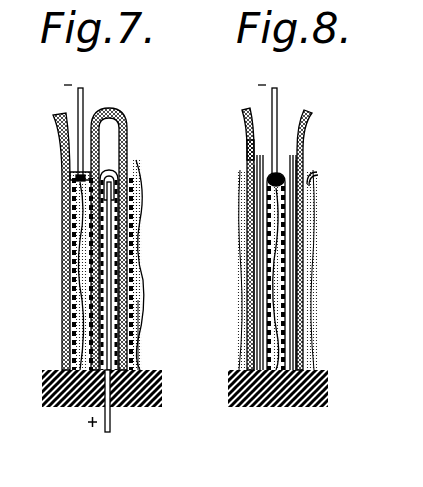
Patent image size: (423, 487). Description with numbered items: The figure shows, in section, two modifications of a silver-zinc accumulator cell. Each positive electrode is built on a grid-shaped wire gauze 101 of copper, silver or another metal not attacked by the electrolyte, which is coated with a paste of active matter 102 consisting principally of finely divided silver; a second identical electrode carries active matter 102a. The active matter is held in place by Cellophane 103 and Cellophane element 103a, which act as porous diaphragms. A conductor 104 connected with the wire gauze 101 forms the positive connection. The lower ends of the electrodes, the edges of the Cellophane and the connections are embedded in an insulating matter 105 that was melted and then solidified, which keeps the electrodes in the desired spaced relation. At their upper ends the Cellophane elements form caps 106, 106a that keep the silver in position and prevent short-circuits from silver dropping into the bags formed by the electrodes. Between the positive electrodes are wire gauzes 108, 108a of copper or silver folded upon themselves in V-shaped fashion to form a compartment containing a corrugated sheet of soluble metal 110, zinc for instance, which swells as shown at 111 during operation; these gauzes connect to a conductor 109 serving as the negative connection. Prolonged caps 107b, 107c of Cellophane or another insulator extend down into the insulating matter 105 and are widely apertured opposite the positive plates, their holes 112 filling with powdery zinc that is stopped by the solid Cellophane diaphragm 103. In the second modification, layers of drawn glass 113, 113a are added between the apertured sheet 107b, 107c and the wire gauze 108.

In FIG. 7, the wire gauze 101 is at (113, 300).
In FIG. 7, the active matter 102 is at (142, 330).
In FIG. 8, the active matter 102 is at (246, 256).
In FIG. 8, the active matter 102a is at (303, 267).
In FIG. 7, the Cellophane 103 is at (66, 248).
In FIG. 8, the Cellophane 103 is at (245, 220).
In FIG. 8, the Cellophane element 103a is at (302, 226).
In FIG. 7, the conductor 104 is at (111, 427).
In FIG. 7, the insulating matter 105 is at (46, 370).
In FIG. 8, the insulating matter 105 is at (318, 370).
In FIG. 8, the cap 106 is at (247, 152).
In FIG. 7, the cap 106a is at (136, 192).
In FIG. 7, the prolonged cap 107b is at (58, 126).
In FIG. 8, the prolonged cap 107b is at (247, 140).
In FIG. 7, the prolonged cap 107c is at (124, 120).
In FIG. 8, the prolonged cap 107c is at (302, 135).
In FIG. 7, the wire gauze 108 is at (70, 176).
In FIG. 8, the wire gauze 108 is at (286, 297).
In FIG. 7, the wire gauze 108a is at (136, 168).
In FIG. 7, the conductor 109 is at (84, 100).
In FIG. 8, the conductor 109 is at (278, 102).
In FIG. 7, the corrugated sheet of soluble metal 110 is at (142, 350).
In FIG. 8, the corrugated sheet of soluble metal 110 is at (270, 277).
In FIG. 7, the swelling of zinc sheet 111 is at (142, 262).
In FIG. 8, the swelling of zinc sheet 111 is at (268, 308).
In FIG. 7, the holes 112 is at (69, 223).
In FIG. 8, the holes 112 is at (298, 318).
In FIG. 8, the layer of drawn glass 113 is at (262, 183).
In FIG. 8, the layer of drawn glass 113a is at (291, 203).